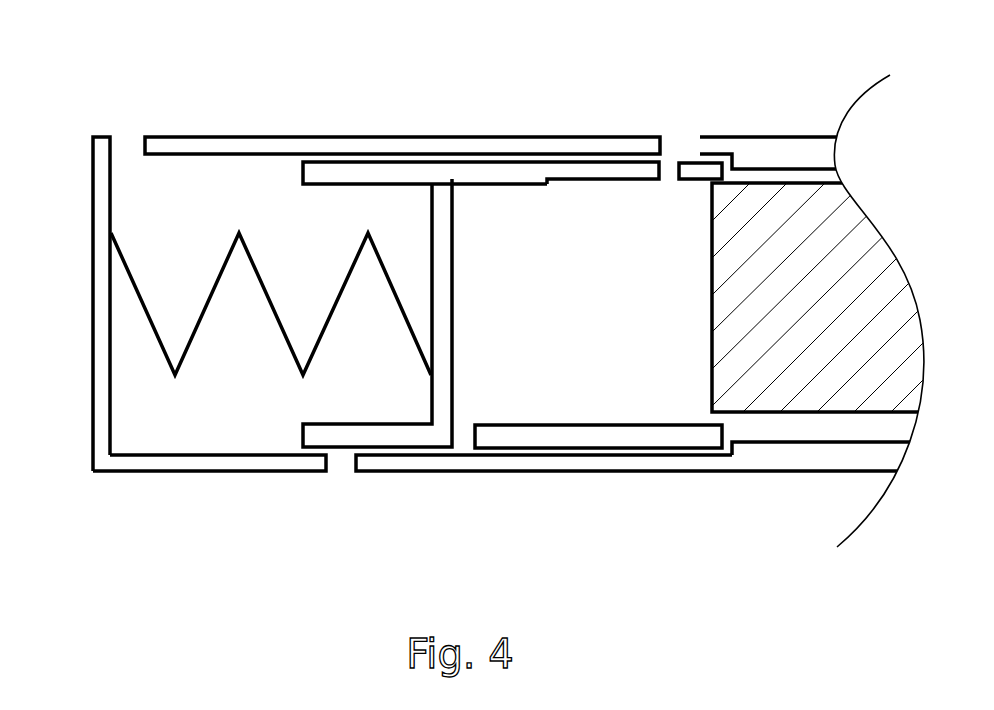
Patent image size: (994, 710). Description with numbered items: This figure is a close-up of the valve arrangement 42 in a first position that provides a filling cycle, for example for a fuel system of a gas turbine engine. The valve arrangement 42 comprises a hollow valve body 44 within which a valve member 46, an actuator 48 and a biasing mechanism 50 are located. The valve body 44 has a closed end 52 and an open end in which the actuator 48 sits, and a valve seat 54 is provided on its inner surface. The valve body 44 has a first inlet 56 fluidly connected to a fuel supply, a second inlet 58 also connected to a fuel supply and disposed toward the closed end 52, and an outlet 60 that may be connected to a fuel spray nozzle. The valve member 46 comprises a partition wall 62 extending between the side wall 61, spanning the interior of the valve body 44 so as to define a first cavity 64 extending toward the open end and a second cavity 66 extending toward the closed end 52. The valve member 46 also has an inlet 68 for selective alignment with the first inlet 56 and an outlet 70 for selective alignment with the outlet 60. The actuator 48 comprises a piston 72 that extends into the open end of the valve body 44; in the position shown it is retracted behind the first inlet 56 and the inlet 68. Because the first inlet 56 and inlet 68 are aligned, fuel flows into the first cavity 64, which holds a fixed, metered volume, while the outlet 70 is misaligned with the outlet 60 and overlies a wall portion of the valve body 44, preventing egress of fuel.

The valve arrangement 42 is at (113, 101).
The valve body 44 is at (107, 425).
The valve member 46 is at (535, 170).
The actuator 48 is at (852, 222).
The biasing mechanism 50 is at (155, 333).
The closed end 52 is at (107, 176).
The valve seat 54 is at (775, 448).
The first inlet 56 is at (670, 146).
The second inlet 58 is at (132, 145).
The outlet 60 is at (355, 458).
The side wall 61 is at (489, 175).
The partition wall 62 is at (442, 197).
The first cavity 64 is at (583, 291).
The second cavity 66 is at (368, 366).
The inlet 68 is at (700, 170).
The outlet 70 is at (475, 438).
The piston 72 is at (865, 292).